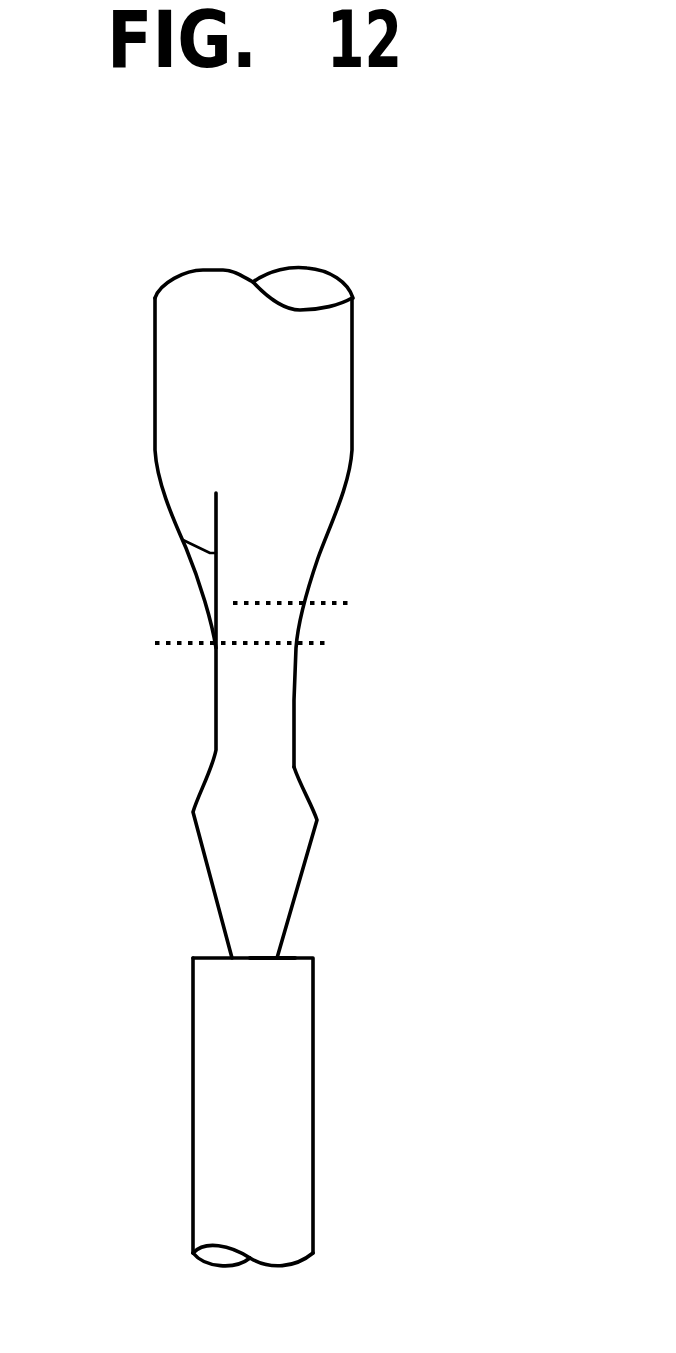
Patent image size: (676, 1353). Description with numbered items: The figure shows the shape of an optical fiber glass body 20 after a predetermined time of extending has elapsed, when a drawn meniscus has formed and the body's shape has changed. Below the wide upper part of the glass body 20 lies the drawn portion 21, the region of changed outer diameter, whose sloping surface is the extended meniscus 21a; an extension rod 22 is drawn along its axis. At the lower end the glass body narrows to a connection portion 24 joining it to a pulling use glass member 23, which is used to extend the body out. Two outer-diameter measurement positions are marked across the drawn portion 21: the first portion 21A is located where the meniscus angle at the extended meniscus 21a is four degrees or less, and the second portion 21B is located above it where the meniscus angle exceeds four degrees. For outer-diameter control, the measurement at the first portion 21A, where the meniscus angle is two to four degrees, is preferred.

The optical fiber glass body 20 is at (323, 355).
The drawn portion 21 is at (273, 573).
The first portion for measurement of the outer diameter 21A is at (350, 642).
The second portion for measurement of the outer diameter 21B is at (372, 603).
The extended meniscus 21a is at (252, 642).
The extension rod 22 is at (255, 735).
The pulling use glass member 23 is at (295, 1075).
The connection portion 24 is at (262, 958).